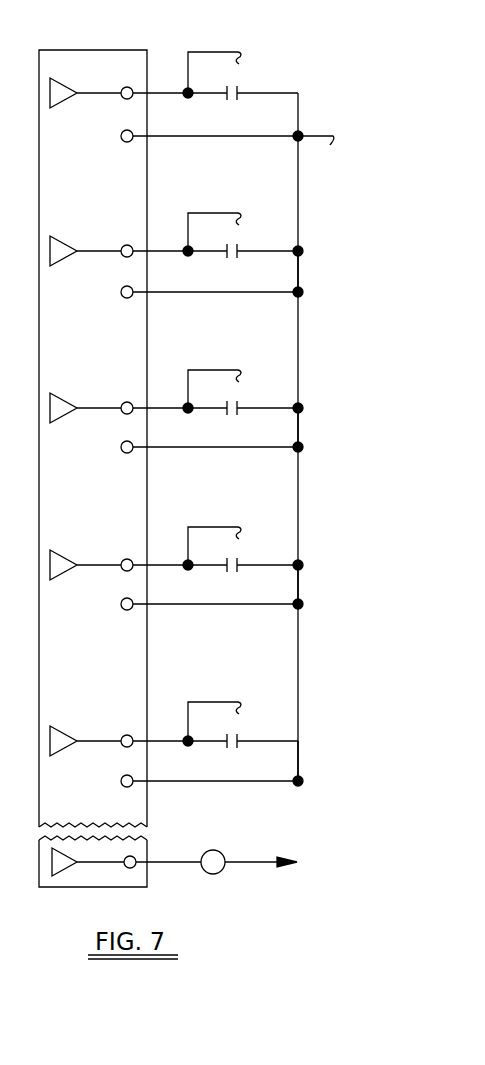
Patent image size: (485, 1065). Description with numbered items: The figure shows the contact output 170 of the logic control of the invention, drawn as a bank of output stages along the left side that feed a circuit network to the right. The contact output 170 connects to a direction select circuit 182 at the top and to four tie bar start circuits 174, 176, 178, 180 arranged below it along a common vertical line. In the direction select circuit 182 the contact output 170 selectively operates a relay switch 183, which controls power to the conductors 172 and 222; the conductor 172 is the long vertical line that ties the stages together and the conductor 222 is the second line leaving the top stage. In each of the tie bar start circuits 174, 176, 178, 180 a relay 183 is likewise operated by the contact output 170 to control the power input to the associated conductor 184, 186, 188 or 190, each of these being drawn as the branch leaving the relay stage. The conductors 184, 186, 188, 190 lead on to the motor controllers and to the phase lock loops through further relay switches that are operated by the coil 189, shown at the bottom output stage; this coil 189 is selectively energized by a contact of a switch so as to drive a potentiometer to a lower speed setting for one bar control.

The contact output 170 is at (76, 62).
The conductor 172 is at (300, 110).
The tie bar start circuit 174 is at (309, 273).
The tie bar start circuit 176 is at (309, 426).
The tie bar start circuit 178 is at (309, 606).
The tie bar start circuit 180 is at (308, 751).
The direction select circuit 182 is at (222, 42).
The relay switch 183 is at (240, 88).
The conductor 184 is at (236, 208).
The conductor 186 is at (233, 367).
The conductor 188 is at (238, 527).
The coil 189 is at (208, 865).
The conductor 190 is at (234, 687).
The conductor 222 is at (324, 130).